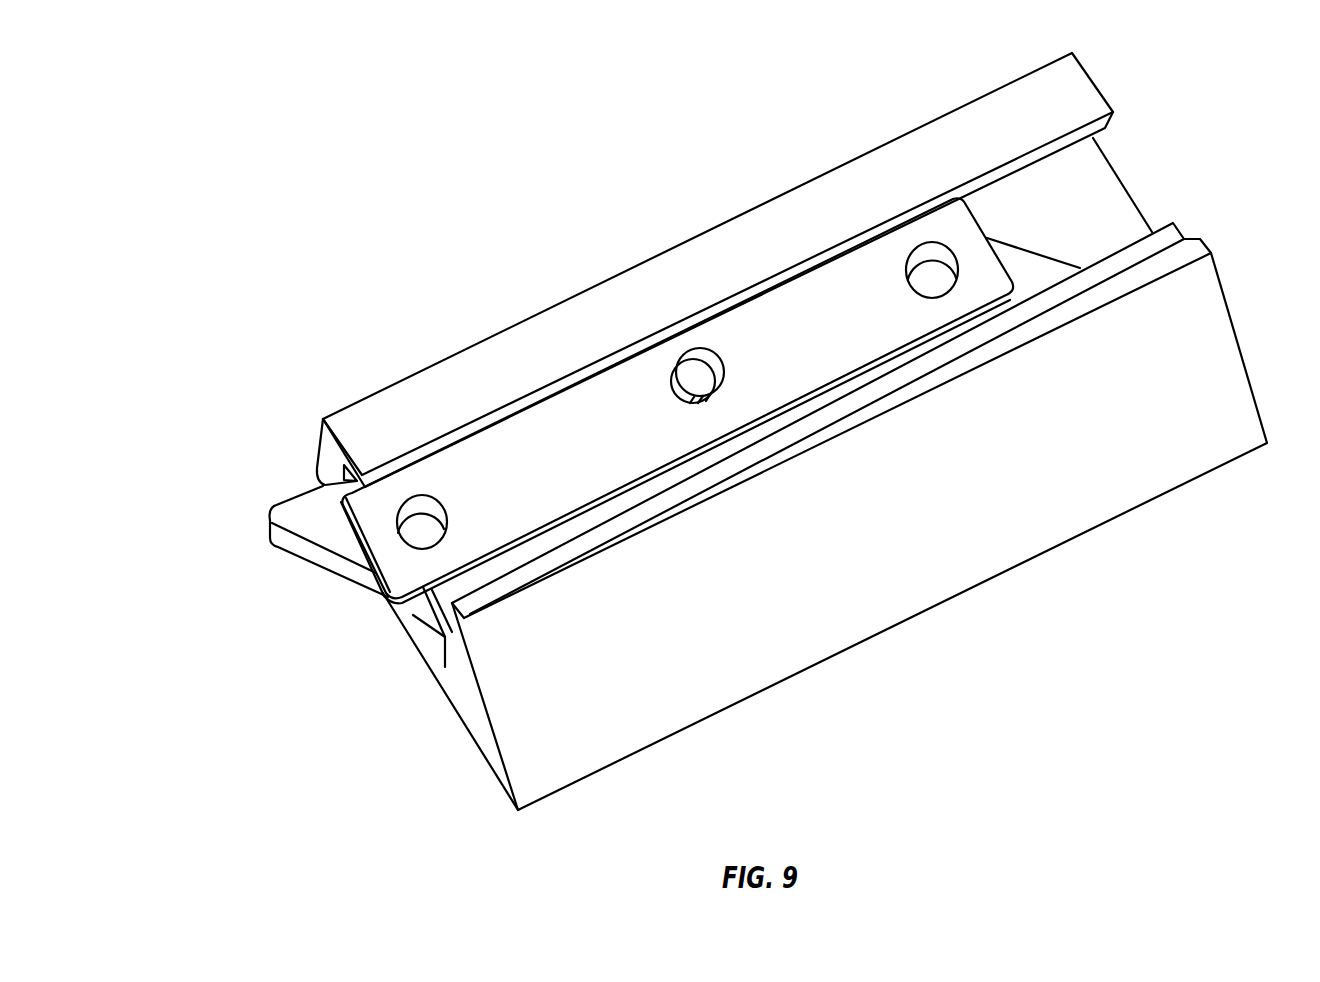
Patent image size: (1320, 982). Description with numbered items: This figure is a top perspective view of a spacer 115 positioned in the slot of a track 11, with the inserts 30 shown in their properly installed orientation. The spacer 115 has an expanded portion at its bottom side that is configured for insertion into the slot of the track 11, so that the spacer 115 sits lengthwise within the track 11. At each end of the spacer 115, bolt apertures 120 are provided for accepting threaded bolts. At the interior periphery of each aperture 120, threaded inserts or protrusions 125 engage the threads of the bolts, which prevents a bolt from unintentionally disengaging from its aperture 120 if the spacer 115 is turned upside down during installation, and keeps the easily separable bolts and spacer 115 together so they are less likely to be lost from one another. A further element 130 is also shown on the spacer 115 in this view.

The track 11 is at (920, 586).
The insert 30 is at (288, 545).
The spacer 115 is at (590, 398).
The bolt aperture 120 is at (430, 495).
The threaded insert or protrusion 125 is at (422, 532).
The fastener 130 is at (707, 372).